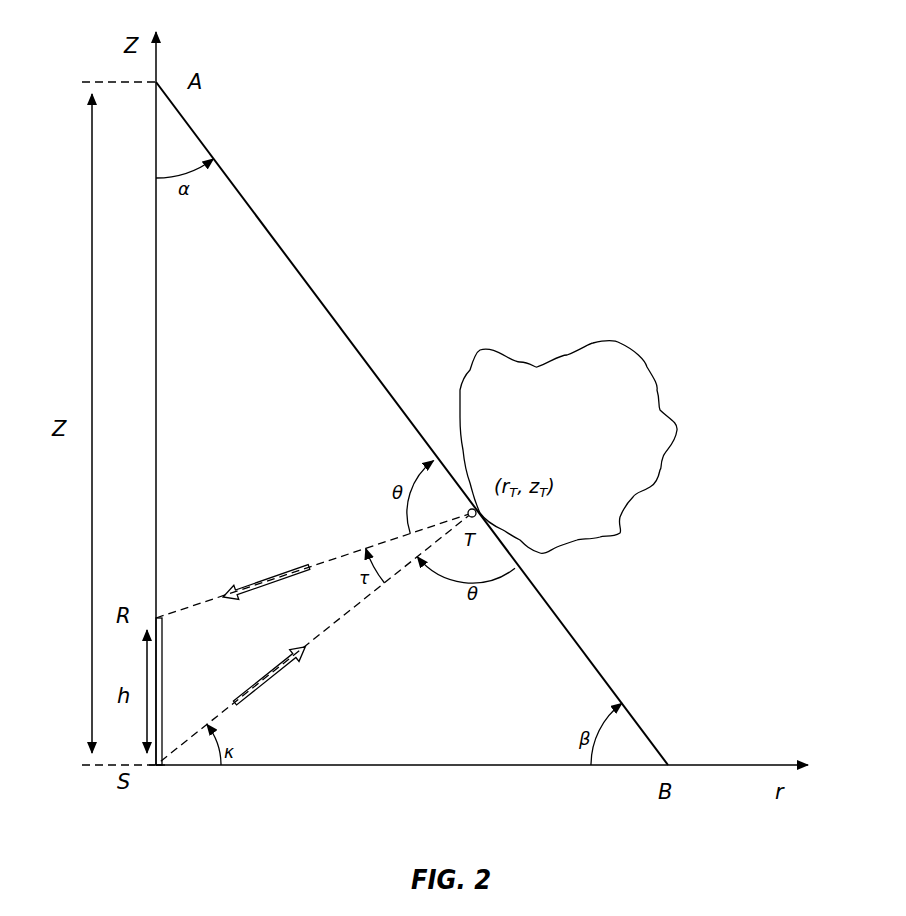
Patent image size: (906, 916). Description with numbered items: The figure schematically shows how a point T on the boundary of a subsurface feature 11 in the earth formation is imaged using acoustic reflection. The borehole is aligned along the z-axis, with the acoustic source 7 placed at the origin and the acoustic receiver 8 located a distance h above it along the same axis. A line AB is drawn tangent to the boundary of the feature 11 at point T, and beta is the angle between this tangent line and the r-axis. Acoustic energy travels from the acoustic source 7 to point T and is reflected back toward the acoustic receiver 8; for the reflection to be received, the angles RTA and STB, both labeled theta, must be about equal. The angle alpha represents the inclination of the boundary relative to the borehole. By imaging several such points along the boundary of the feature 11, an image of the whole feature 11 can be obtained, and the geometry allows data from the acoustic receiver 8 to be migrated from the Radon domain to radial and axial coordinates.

The acoustic source 7 is at (160, 767).
The acoustic receiver 8 is at (160, 617).
The subsurface feature 11 is at (645, 366).